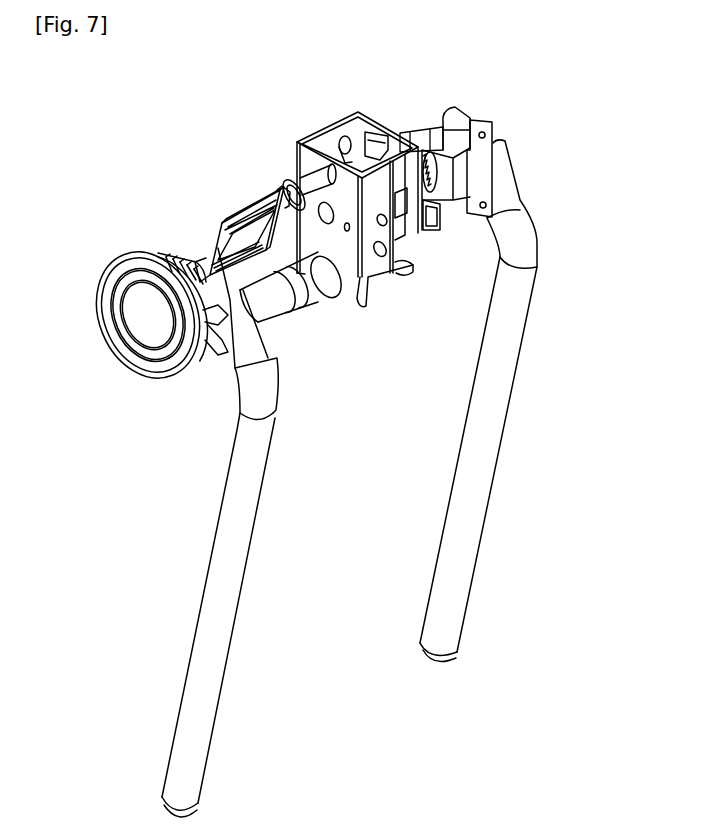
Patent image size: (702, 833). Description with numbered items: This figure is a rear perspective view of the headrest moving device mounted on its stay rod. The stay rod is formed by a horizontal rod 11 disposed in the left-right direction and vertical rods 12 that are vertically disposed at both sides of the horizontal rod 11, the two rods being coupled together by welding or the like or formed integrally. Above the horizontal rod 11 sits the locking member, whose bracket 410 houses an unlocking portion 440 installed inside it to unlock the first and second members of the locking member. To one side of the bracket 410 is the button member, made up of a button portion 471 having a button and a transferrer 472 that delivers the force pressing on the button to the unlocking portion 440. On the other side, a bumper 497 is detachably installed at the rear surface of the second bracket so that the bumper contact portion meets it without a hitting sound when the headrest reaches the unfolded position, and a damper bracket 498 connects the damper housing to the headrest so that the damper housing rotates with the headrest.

The horizontal rod 11 is at (315, 278).
The vertical rod 12 is at (258, 438).
The bracket 410 is at (327, 124).
The unlocking portion 440 is at (358, 157).
The button portion 471 is at (123, 270).
The transferrer 472 is at (248, 208).
The bumper 497 is at (418, 250).
The damper bracket 498 is at (487, 195).